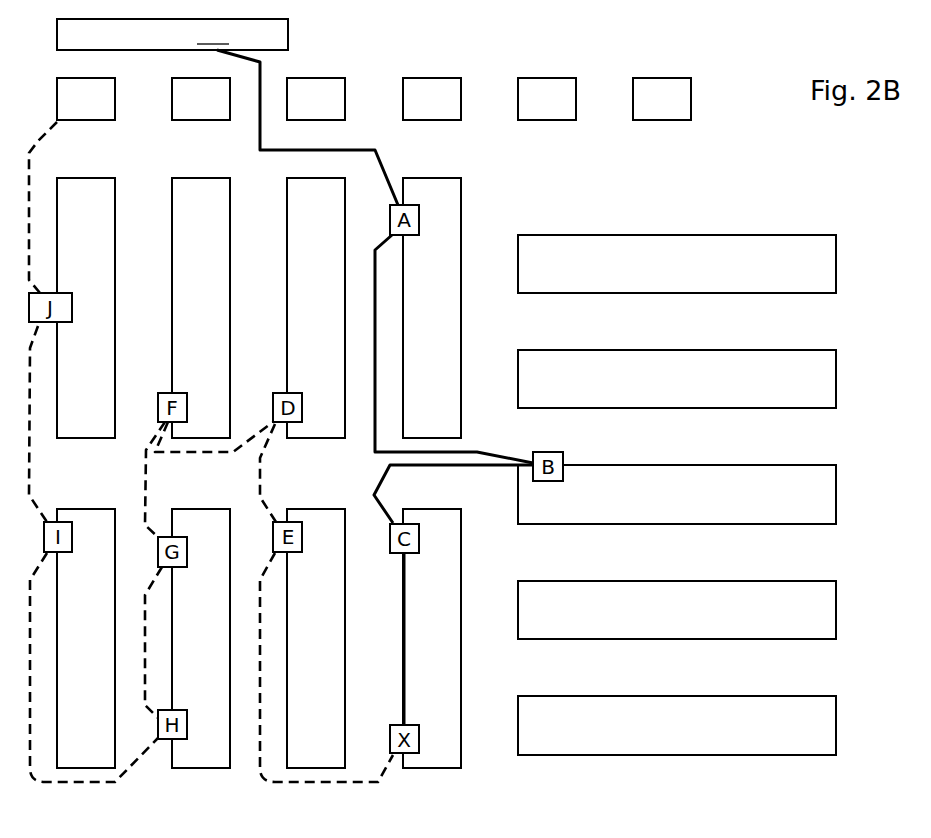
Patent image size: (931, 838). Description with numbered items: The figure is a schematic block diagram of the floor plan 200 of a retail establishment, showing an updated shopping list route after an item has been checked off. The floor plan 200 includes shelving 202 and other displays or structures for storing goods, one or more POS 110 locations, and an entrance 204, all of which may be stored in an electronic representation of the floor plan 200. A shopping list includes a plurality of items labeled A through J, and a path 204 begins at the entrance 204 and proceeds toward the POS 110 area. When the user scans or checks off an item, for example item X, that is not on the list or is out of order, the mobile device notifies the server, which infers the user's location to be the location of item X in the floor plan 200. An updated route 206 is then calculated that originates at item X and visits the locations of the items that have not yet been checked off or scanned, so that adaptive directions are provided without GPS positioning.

The POS 110 is at (72, 107).
The floor plan 200 is at (758, 157).
The shelving 202 is at (462, 188).
The entrance 204 is at (462, 452).
The route 206 is at (275, 497).